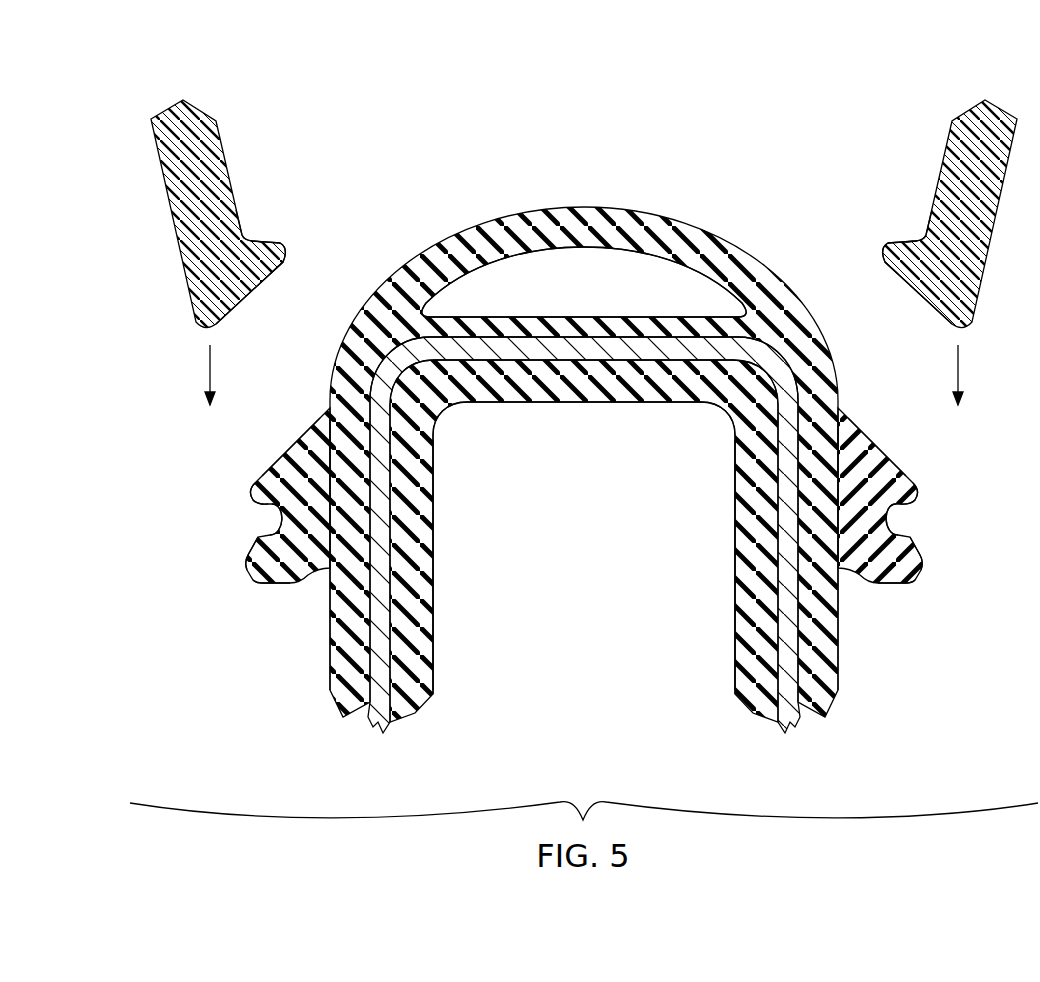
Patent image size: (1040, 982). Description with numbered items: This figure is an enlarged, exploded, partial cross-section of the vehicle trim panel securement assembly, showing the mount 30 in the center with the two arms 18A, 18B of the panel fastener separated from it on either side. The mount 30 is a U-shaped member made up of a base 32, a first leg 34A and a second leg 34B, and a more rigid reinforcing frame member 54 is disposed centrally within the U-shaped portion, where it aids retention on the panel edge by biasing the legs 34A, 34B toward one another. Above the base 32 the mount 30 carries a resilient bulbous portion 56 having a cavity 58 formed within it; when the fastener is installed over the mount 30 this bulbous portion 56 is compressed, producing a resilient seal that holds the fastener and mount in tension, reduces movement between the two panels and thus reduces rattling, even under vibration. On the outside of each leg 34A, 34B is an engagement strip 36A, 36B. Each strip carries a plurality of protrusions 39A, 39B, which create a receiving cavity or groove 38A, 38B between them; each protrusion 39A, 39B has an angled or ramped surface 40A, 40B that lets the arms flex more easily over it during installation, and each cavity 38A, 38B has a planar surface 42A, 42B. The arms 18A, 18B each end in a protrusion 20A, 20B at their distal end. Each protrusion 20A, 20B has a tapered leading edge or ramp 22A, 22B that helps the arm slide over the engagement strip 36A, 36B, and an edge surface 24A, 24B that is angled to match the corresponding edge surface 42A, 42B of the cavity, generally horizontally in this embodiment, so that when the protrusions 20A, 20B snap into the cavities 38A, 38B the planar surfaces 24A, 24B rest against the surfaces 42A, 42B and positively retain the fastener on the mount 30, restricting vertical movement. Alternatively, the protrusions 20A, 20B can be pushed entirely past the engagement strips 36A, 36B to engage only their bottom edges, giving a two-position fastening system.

The arm 18A is at (238, 153).
The arm 18B is at (942, 145).
The protrusion 20A is at (288, 250).
The protrusion 20B is at (880, 250).
The tapered leading edge 22A is at (262, 292).
The tapered leading edge 22B is at (908, 292).
The edge surface 24A is at (258, 236).
The edge surface 24B is at (911, 236).
The mount 30 is at (583, 430).
The base 32 is at (577, 404).
The first leg 34A is at (433, 532).
The second leg 34B is at (735, 532).
The engagement strip 36A is at (292, 430).
The engagement strip 36B is at (880, 418).
The receiving cavity 38A is at (252, 510).
The receiving cavity 38B is at (916, 510).
The protrusion 39A is at (257, 490).
The protrusion 39B is at (911, 490).
The angled surface 40A is at (277, 458).
The angled surface 40B is at (891, 458).
The planar surface 42A is at (265, 538).
The planar surface 42B is at (903, 538).
The reinforcing frame member 54 is at (388, 452).
The resilient bulbous portion 56 is at (586, 198).
The cavity 58 is at (622, 272).